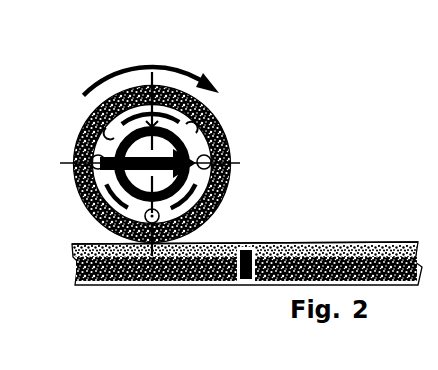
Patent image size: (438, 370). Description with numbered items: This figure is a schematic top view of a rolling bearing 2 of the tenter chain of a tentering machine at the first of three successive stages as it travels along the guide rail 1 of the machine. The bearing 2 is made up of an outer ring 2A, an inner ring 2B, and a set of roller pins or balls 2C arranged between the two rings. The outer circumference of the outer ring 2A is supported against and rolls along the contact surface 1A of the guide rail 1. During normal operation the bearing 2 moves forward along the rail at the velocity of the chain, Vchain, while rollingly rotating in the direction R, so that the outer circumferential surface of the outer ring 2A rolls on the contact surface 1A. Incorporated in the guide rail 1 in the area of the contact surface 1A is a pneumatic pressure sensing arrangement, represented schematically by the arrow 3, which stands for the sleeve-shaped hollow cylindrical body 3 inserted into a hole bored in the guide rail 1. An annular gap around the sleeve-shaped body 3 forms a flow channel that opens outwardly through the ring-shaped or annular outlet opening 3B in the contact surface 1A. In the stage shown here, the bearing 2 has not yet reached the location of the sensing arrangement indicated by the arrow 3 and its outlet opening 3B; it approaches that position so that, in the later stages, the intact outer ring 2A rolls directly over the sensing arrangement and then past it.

The guide rail 1 is at (347, 262).
The contact surface 1A is at (312, 245).
The bearing 2 is at (169, 149).
The outer ring 2A is at (214, 121).
The inner ring 2B is at (97, 138).
The roller pins or balls 2C is at (113, 140).
The sleeve-shaped hollow cylindrical body 3 is at (250, 252).
The annular outlet opening 3B is at (244, 249).
The direction of rotation R is at (178, 65).
The velocity of the chain Vchain is at (201, 162).